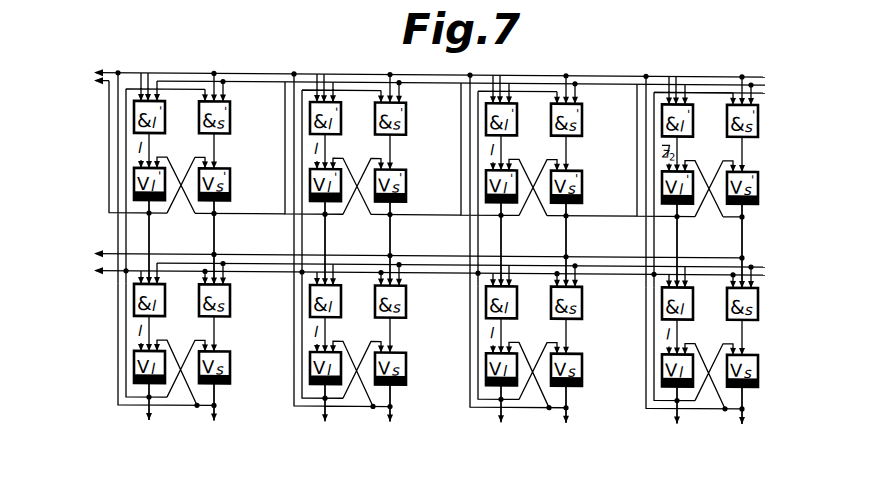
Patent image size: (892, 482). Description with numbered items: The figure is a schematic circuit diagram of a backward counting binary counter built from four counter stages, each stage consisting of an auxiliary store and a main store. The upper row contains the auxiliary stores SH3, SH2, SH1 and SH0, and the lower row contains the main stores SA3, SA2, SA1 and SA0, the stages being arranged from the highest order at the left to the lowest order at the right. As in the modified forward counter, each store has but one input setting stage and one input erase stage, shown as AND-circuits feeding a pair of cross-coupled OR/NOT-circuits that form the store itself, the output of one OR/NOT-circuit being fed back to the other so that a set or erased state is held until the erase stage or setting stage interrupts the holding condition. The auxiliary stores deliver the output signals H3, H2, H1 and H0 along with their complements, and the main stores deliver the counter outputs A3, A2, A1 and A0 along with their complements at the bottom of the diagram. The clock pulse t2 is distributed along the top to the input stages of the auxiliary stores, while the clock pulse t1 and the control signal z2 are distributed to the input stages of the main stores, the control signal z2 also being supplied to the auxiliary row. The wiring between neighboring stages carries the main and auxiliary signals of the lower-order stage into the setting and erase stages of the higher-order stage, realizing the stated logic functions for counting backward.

The auxiliary store SH3 is at (271, 161).
The auxiliary store SH2 is at (447, 161).
The auxiliary store SH1 is at (623, 161).
The auxiliary store SH0 is at (794, 161).
The main store SA3 is at (272, 346).
The main store SA2 is at (448, 346).
The main store SA1 is at (624, 346).
The main store SA0 is at (794, 346).
The auxiliary store output signal H3 is at (162, 242).
The auxiliary store output signal H2 is at (338, 243).
The auxiliary store output signal H1 is at (514, 244).
The auxiliary store output signal H0 is at (690, 245).
The main store output signal A3 is at (152, 417).
The main store output signal A2 is at (328, 418).
The main store output signal A1 is at (504, 419).
The main store output signal A0 is at (680, 420).
The clock pulse t2 is at (438, 82).
The clock pulse t1 is at (438, 285).
The control signal z2 is at (471, 184).